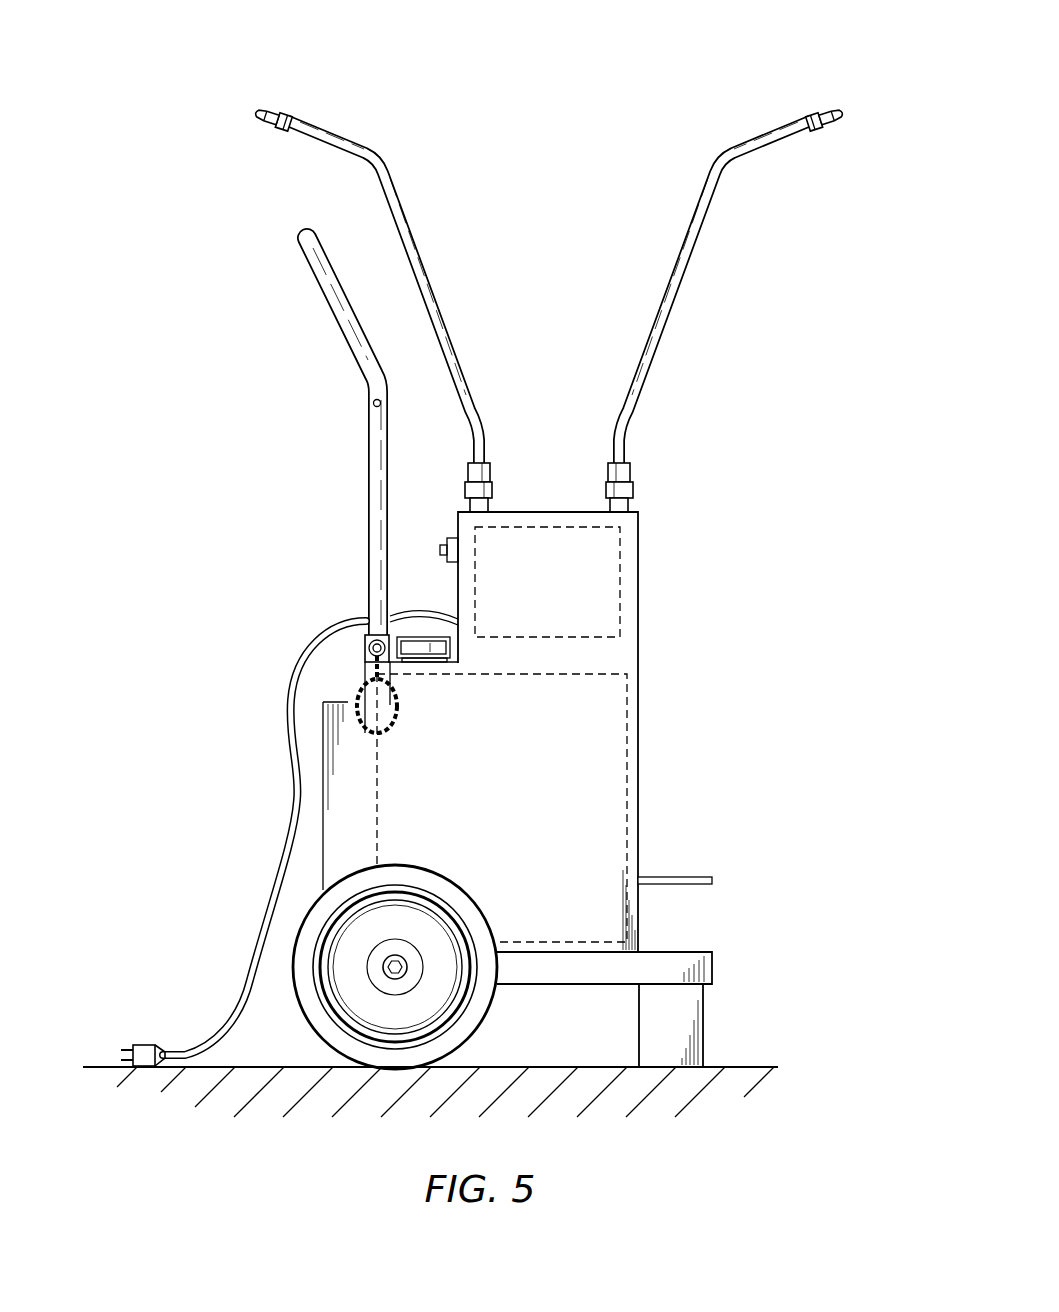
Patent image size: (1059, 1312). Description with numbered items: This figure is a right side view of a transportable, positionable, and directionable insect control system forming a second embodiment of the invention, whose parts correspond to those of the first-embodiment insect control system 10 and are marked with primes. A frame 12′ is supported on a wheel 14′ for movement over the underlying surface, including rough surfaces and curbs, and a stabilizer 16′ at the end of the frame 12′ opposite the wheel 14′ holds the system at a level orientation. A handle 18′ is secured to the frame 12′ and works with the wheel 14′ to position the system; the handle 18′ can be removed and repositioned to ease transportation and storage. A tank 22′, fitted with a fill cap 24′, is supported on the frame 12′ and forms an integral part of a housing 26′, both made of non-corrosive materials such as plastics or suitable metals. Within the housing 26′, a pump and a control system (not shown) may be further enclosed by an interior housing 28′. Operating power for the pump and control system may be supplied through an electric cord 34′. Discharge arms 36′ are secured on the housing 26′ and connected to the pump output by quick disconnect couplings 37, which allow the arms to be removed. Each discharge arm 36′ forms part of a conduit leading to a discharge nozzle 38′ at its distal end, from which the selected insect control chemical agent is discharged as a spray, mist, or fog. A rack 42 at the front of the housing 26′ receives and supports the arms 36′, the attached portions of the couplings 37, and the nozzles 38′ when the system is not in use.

The insect control system 10 is at (130, 452).
The frame 12′ is at (551, 996).
The wheels 14′ is at (307, 1018).
The stabilizers 16′ is at (705, 1020).
The handle 18′ is at (366, 490).
The tank 22′ is at (628, 728).
The fill cap 24′ is at (422, 637).
The housing 26′ is at (646, 634).
The interior housing 28′ is at (624, 572).
The electric cord 34′ is at (289, 770).
The discharge arms 36′ is at (424, 250).
The quick disconnect couplings 37 is at (465, 485).
The discharge nozzles 38′ is at (257, 104).
The rack 42 is at (690, 877).